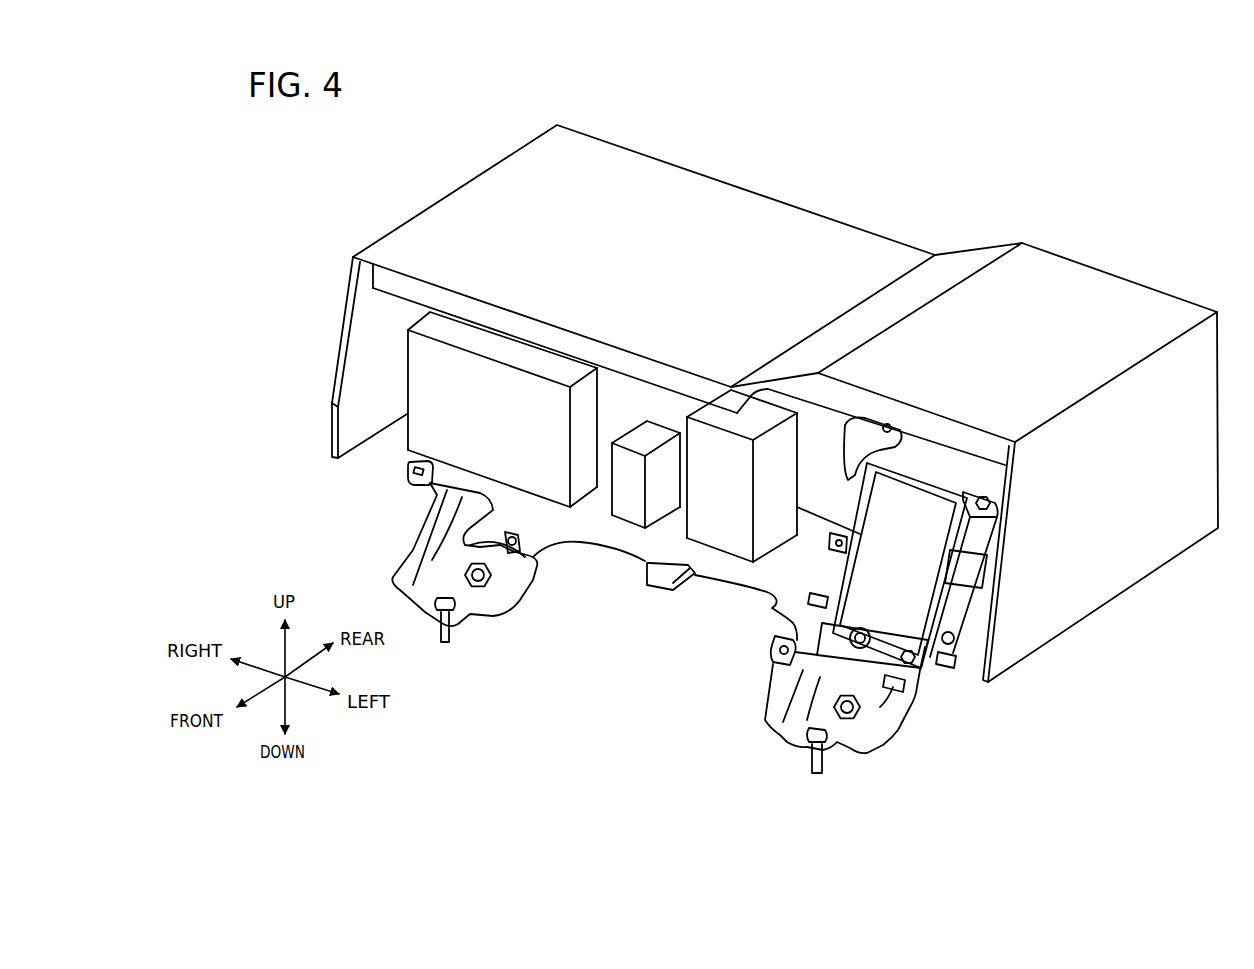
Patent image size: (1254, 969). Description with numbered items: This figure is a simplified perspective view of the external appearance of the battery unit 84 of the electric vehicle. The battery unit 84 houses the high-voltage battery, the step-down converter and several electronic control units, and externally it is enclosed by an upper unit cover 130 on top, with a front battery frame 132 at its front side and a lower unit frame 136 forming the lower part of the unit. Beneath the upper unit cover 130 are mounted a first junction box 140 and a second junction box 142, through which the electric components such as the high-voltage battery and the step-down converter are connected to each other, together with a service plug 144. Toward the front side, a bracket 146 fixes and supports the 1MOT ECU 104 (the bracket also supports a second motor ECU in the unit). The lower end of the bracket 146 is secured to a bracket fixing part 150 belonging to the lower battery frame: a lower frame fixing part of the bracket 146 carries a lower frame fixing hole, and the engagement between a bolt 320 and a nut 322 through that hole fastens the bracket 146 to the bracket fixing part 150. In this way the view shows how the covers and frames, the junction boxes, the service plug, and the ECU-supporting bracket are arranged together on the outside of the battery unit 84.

The battery unit 84 is at (790, 124).
The upper unit cover 130 is at (786, 228).
The front battery frame 132 is at (840, 435).
The first junction box 140 is at (468, 333).
The second junction box 142 is at (710, 457).
The service plug 144 is at (623, 512).
The 1MOT ECU 104 is at (915, 500).
The bracket 146 is at (971, 573).
The bolt 320 is at (778, 609).
The nut 322 is at (835, 620).
The bracket fixing part 150 is at (803, 668).
The lower unit frame 136 is at (883, 745).